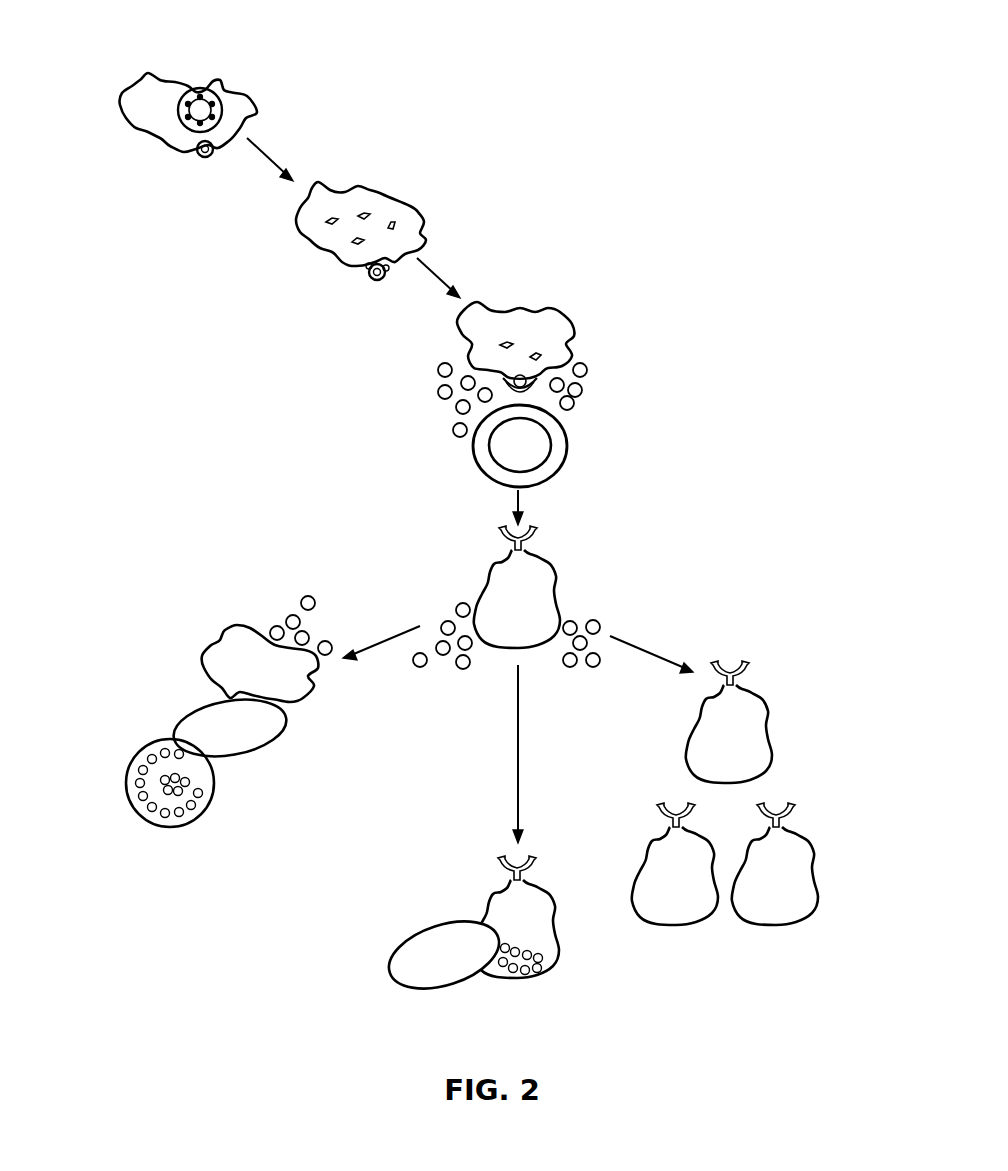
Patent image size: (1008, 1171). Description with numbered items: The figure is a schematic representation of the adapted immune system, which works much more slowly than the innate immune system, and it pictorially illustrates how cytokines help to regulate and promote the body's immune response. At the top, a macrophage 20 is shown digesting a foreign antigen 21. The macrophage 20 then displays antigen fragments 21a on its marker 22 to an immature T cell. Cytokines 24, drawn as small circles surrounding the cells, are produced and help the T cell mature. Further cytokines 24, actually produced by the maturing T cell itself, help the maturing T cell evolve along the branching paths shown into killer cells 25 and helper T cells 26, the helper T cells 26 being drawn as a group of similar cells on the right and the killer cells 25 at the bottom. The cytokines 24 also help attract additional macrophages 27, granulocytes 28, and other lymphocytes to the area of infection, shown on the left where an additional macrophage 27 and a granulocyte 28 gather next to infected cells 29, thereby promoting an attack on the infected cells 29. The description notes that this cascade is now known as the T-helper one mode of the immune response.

The macrophage 20 is at (130, 110).
The foreign antigen 21 is at (203, 102).
The antigen fragments 21a is at (363, 277).
The marker 22 is at (315, 255).
The cytokines 24 is at (422, 391).
The killer cells 25 is at (550, 963).
The helper T cells 26 is at (817, 883).
The additional macrophages 27 is at (203, 663).
The granulocytes 28 is at (127, 785).
The infected cells 29 is at (173, 723).